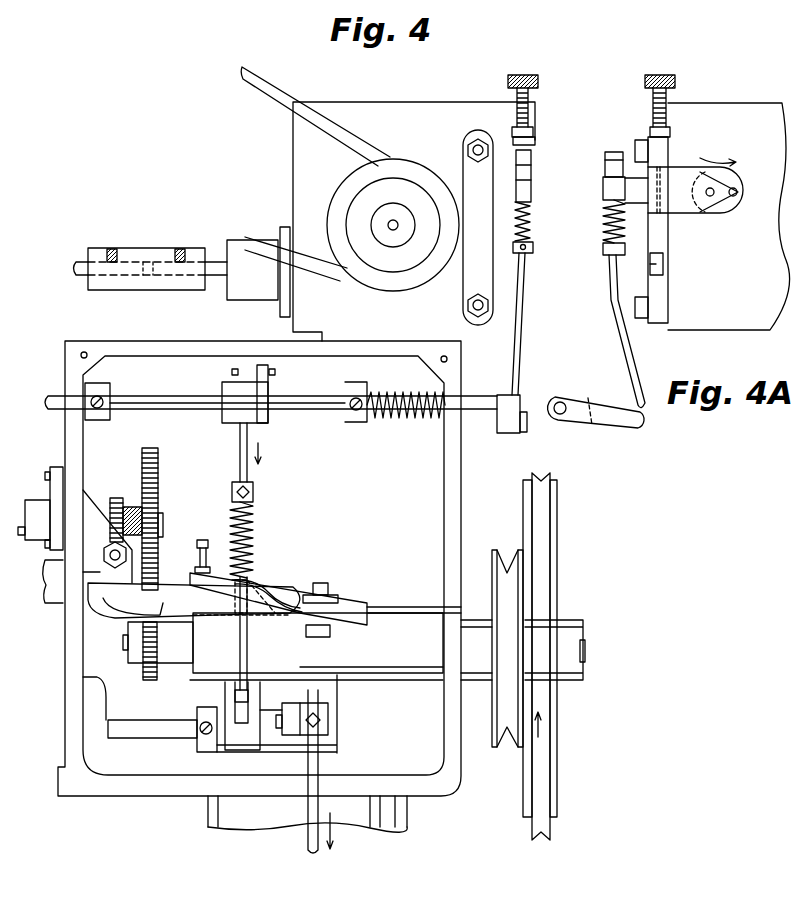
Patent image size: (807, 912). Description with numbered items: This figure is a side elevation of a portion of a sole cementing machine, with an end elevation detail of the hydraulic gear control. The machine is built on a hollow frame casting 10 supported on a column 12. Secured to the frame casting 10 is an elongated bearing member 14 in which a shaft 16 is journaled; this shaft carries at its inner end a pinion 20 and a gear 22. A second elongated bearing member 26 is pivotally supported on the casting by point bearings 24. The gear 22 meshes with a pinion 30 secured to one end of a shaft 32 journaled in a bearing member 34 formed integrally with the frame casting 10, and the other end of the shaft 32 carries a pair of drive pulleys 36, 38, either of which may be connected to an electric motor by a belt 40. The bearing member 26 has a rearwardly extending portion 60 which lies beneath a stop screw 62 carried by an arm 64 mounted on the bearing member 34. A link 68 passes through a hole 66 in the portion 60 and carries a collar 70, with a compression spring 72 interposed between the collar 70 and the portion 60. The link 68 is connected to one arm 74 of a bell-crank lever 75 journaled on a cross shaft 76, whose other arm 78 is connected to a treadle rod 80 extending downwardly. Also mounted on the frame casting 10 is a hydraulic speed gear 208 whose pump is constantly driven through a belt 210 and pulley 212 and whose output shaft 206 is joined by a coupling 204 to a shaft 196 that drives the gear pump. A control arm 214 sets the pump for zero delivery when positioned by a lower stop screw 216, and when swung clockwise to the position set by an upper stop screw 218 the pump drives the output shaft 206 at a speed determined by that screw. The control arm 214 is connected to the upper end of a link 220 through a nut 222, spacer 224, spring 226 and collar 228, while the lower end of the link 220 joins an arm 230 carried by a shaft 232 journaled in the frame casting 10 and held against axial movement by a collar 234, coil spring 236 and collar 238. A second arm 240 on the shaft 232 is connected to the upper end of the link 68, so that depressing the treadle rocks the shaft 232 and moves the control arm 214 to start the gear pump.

In FIG. 4, the hollow frame casting 10 is at (131, 797).
In FIG. 4, the column 12 is at (208, 822).
In FIG. 4, the elongated bearing member 14 is at (35, 500).
In FIG. 4, the shaft 16 is at (20, 536).
In FIG. 4, the pinion 20 is at (118, 498).
In FIG. 4, the gear 22 is at (160, 470).
In FIG. 4, the point bearings 24 is at (111, 548).
In FIG. 4, the second elongated bearing member 26 is at (52, 606).
In FIG. 4, the pinion 30 is at (148, 681).
In FIG. 4, the shaft 32 is at (123, 643).
In FIG. 4, the bearing member 34 is at (390, 606).
In FIG. 4, the drive pulley 36 is at (527, 568).
In FIG. 4, the drive pulley 38 is at (490, 745).
In FIG. 4, the belt 40 is at (553, 833).
In FIG. 4, the rearwardly extending portion 60 is at (118, 618).
In FIG. 4, the stop screw 62 is at (203, 540).
In FIG. 4, the arm 64 is at (286, 600).
In FIG. 4, the hole 66 is at (258, 590).
In FIG. 4, the link 68 is at (252, 656).
In FIG. 4, the collar 70 is at (255, 492).
In FIG. 4, the compression spring 72 is at (255, 530).
In FIG. 4, the arm 74 is at (262, 688).
In FIG. 4, the bell-crank lever 75 is at (262, 751).
In FIG. 4, the cross shaft 76 is at (144, 742).
In FIG. 4, the arm 78 is at (294, 702).
In FIG. 4, the treadle rod 80 is at (308, 843).
In FIG. 4, the shaft 196 is at (80, 260).
In FIG. 4, the coupling 204 is at (145, 248).
In FIG. 4, the output shaft 206 is at (215, 262).
In FIG. 4, the hydraulic speed gear 208 is at (437, 100).
In FIG. 4, the belt 210 is at (258, 72).
In FIG. 4, the pulley 212 is at (343, 188).
In FIG. 4A, the control arm 214 is at (690, 215).
In FIG. 4, the lower stop screw 216 is at (530, 268).
In FIG. 4A, the lower stop screw 216 is at (664, 278).
In FIG. 4, the upper stop screw 218 is at (521, 75).
In FIG. 4A, the upper stop screw 218 is at (662, 75).
In FIG. 4, the link 220 is at (507, 352).
In FIG. 4A, the link 220 is at (611, 341).
In FIG. 4A, the nut 222 is at (606, 152).
In FIG. 4A, the spacer 224 is at (604, 172).
In FIG. 4A, the spring 226 is at (604, 225).
In FIG. 4A, the collar 228 is at (605, 258).
In FIG. 4, the arm 230 is at (520, 395).
In FIG. 4A, the arm 230 is at (612, 397).
In FIG. 4, the shaft 232 is at (166, 395).
In FIG. 4A, the shaft 232 is at (563, 421).
In FIG. 4, the collar 234 is at (100, 386).
In FIG. 4, the coil spring 236 is at (405, 420).
In FIG. 4, the collar 238 is at (352, 423).
In FIG. 4, the second arm 240 is at (263, 363).